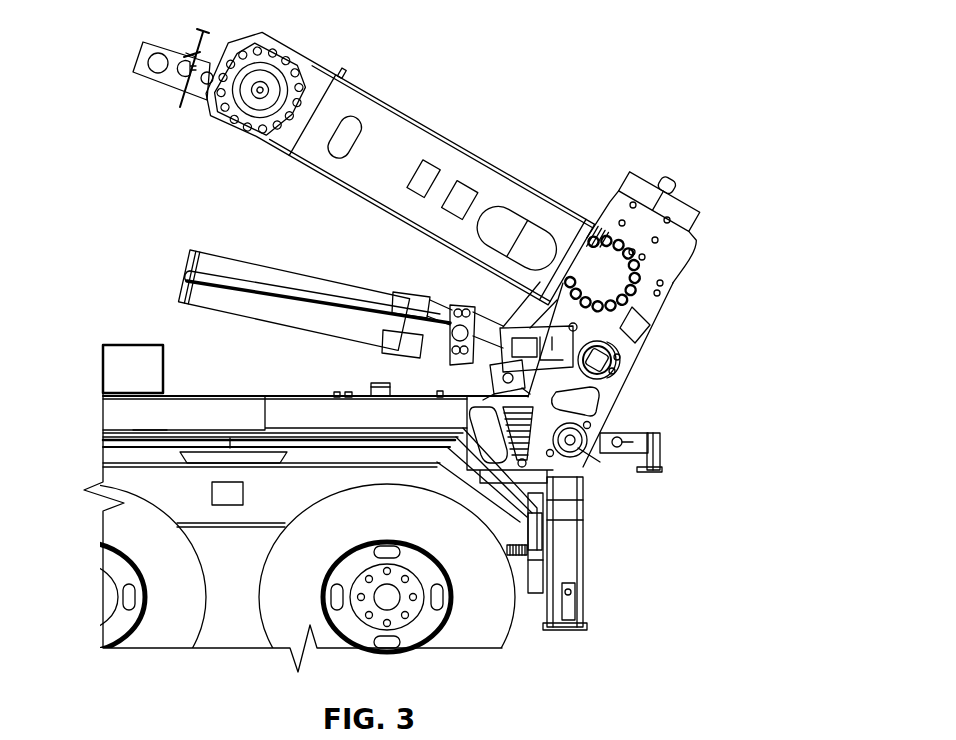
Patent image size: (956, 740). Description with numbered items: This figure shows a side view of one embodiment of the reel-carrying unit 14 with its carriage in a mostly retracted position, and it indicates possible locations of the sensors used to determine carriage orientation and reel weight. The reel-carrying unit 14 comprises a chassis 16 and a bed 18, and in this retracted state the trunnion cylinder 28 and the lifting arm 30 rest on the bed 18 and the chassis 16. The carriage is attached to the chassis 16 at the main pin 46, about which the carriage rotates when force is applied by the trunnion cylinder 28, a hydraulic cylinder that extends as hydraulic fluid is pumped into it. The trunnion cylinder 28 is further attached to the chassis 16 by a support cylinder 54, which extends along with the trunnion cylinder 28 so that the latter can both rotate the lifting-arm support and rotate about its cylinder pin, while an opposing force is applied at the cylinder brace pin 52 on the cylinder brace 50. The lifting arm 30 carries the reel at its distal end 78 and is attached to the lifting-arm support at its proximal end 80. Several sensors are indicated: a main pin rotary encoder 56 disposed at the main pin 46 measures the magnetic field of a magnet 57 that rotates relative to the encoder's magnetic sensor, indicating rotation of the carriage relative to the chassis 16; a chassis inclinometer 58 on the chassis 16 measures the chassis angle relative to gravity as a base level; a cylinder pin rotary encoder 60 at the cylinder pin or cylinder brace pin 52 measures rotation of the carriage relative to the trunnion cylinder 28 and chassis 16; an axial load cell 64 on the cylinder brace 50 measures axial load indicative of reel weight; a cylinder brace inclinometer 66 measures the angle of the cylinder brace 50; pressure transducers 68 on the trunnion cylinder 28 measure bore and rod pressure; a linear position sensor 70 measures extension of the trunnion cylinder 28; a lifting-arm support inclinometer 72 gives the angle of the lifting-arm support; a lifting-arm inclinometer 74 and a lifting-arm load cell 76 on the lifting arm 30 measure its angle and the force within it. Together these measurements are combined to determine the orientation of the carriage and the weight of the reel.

The reel-carrying unit 14 is at (642, 32).
The chassis 16 is at (125, 480).
The bed 18 is at (120, 412).
The trunnion cylinder 28 is at (222, 270).
The lifting arm 30 is at (382, 108).
The main pin 46 is at (537, 450).
The cylinder brace 50 is at (492, 318).
The cylinder brace pin 52 is at (607, 378).
The support cylinder 54 is at (583, 557).
The main pin rotary encoder 56 is at (603, 427).
The magnet 57 is at (590, 443).
The chassis inclinometer 58 is at (227, 493).
The cylinder pin rotary encoder 60 is at (625, 357).
The axial load cell 64 is at (482, 371).
The cylinder brace inclinometer 66 is at (457, 305).
The pressure transducers 68 is at (383, 335).
The linear position sensor 70 is at (288, 300).
The lifting-arm support inclinometer 72 is at (638, 331).
The lifting-arm inclinometer 74 is at (462, 205).
The lifting-arm load cell 76 is at (426, 180).
The distal end 78 is at (295, 22).
The proximal end 80 is at (573, 152).